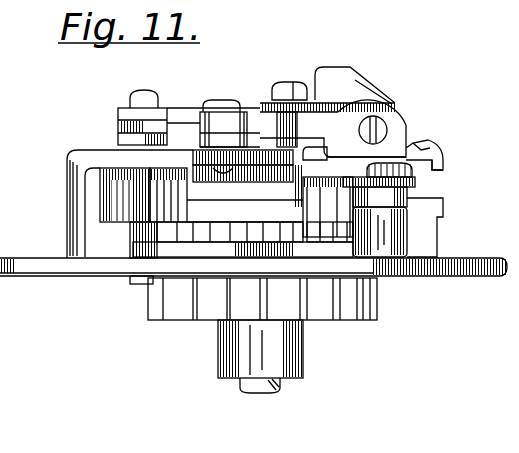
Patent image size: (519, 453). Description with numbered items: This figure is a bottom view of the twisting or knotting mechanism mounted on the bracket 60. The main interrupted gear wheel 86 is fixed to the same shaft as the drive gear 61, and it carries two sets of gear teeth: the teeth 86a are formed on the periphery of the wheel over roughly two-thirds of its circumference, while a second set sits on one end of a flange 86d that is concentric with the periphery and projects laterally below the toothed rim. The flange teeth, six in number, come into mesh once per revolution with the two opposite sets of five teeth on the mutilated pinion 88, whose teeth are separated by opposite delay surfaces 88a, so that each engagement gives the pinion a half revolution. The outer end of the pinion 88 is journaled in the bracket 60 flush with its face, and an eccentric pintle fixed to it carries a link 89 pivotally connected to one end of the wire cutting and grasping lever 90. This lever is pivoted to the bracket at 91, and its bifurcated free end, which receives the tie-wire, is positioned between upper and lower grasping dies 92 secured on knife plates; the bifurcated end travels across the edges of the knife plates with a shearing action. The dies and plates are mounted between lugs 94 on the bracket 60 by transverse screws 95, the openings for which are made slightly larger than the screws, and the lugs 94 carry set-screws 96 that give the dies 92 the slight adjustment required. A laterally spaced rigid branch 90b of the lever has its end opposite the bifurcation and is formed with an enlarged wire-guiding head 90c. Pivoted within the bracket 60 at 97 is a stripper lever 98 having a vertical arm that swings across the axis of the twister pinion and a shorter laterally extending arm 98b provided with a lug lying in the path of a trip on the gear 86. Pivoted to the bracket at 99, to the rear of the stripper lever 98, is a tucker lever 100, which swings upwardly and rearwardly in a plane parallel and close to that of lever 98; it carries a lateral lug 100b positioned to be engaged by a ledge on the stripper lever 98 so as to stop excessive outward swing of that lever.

The bracket 60 is at (100, 265).
The drive gear 61 is at (182, 312).
The main interrupted gear wheel 86 is at (442, 200).
The gear teeth 86a is at (200, 235).
The flange 86d is at (208, 208).
The mutilated pinion 88 is at (113, 148).
The delay surfaces 88a is at (110, 190).
The link 89 is at (163, 193).
The wire cutting and grasping lever 90 is at (183, 127).
The rigid branch 90b is at (254, 112).
The wire-guiding head 90c is at (330, 73).
The pivot 91 is at (295, 84).
The grasping dies 92 is at (407, 113).
The lugs 94 is at (408, 118).
The screws 95 is at (400, 123).
The set-screws 96 is at (360, 127).
The pivot 97 is at (417, 143).
The stripper lever 98 is at (417, 183).
The laterally extending arm 98b is at (320, 184).
The pivot 99 is at (209, 101).
The tucker lever 100 is at (277, 143).
The lateral lug 100b is at (437, 152).